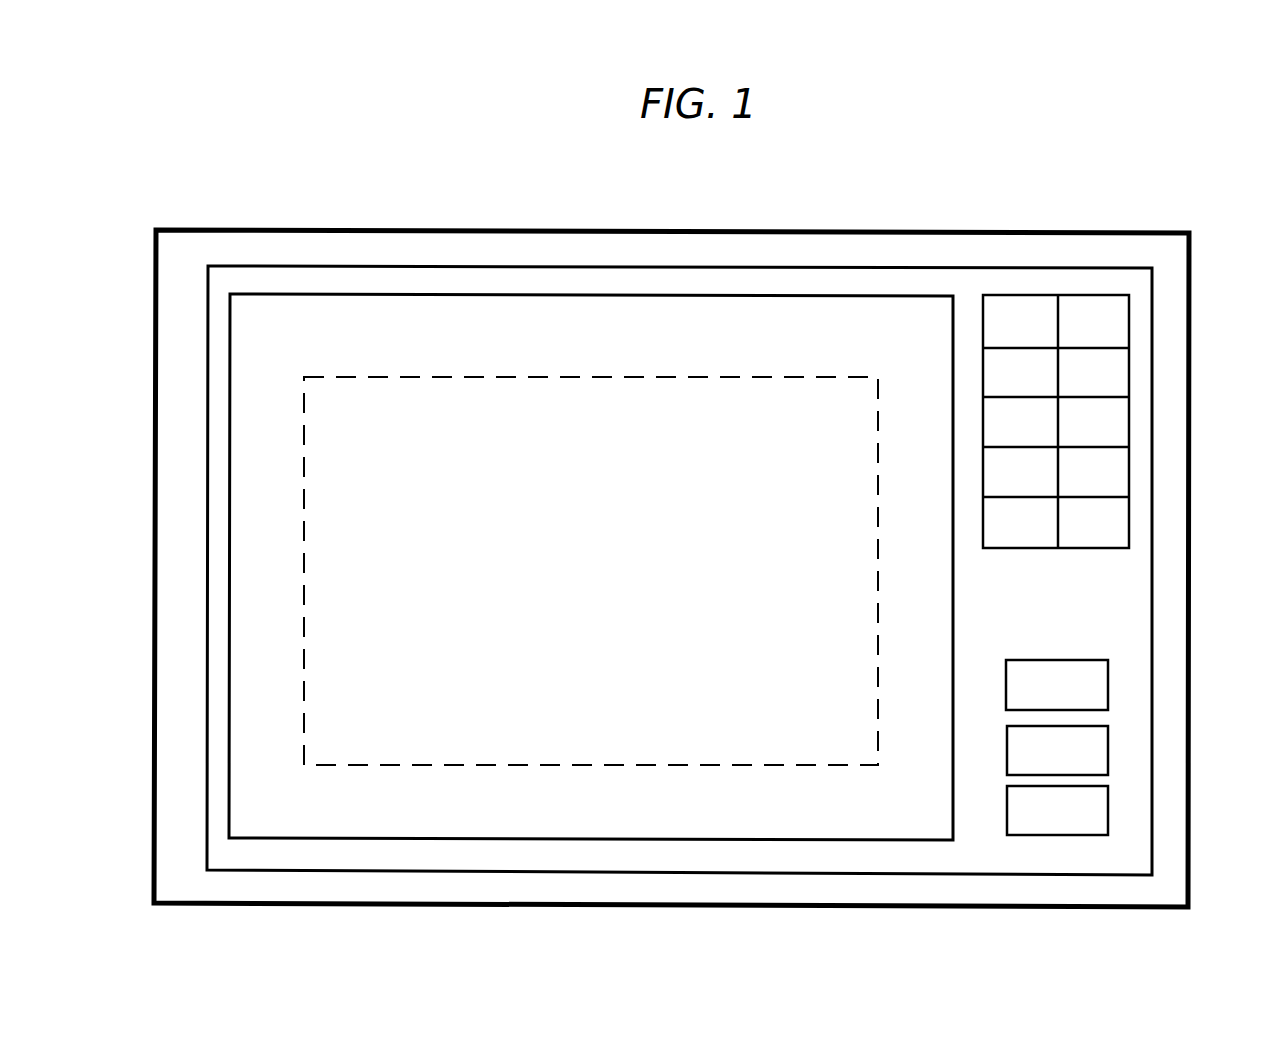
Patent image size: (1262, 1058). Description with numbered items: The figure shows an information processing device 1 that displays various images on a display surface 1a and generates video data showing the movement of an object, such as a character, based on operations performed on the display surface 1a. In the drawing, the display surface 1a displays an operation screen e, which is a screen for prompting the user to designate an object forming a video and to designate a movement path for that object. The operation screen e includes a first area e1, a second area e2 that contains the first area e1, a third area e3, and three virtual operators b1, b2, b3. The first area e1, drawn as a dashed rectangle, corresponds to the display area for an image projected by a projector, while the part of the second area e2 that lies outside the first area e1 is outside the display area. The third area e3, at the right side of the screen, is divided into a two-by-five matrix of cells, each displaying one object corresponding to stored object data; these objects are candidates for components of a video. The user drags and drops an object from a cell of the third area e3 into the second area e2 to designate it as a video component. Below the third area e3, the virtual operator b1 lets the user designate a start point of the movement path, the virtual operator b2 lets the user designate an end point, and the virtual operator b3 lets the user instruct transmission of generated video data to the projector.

The information processing device 1 is at (1114, 214).
The display surface 1a is at (283, 268).
The operation screen e is at (367, 285).
The first area e1 is at (467, 415).
The second area e2 is at (544, 340).
The third area e3 is at (1129, 370).
The virtual operator b1 is at (1108, 683).
The virtual operator b2 is at (1108, 751).
The virtual operator b3 is at (1108, 803).